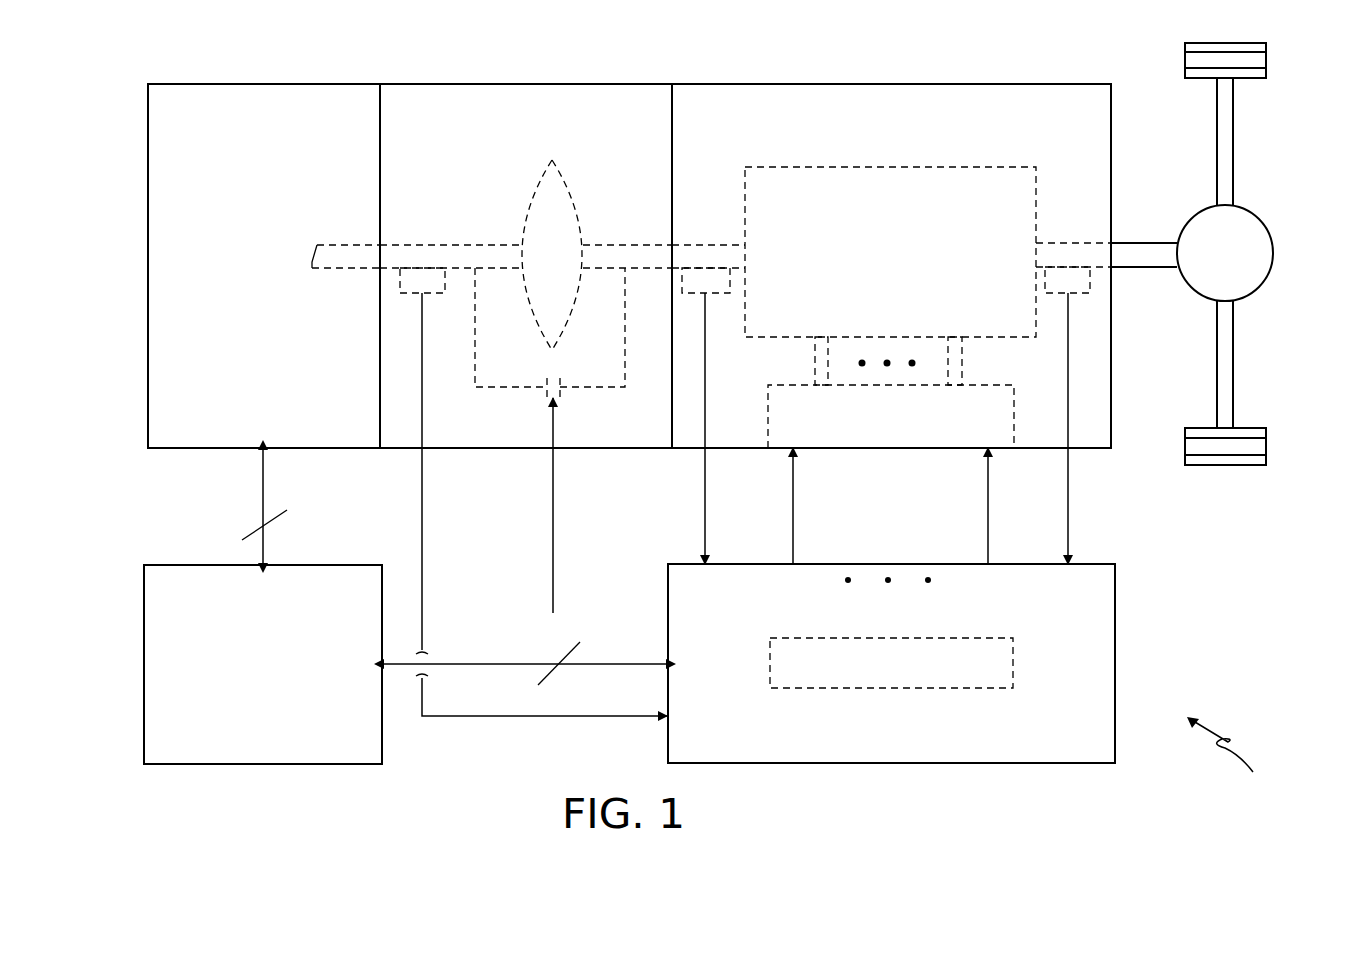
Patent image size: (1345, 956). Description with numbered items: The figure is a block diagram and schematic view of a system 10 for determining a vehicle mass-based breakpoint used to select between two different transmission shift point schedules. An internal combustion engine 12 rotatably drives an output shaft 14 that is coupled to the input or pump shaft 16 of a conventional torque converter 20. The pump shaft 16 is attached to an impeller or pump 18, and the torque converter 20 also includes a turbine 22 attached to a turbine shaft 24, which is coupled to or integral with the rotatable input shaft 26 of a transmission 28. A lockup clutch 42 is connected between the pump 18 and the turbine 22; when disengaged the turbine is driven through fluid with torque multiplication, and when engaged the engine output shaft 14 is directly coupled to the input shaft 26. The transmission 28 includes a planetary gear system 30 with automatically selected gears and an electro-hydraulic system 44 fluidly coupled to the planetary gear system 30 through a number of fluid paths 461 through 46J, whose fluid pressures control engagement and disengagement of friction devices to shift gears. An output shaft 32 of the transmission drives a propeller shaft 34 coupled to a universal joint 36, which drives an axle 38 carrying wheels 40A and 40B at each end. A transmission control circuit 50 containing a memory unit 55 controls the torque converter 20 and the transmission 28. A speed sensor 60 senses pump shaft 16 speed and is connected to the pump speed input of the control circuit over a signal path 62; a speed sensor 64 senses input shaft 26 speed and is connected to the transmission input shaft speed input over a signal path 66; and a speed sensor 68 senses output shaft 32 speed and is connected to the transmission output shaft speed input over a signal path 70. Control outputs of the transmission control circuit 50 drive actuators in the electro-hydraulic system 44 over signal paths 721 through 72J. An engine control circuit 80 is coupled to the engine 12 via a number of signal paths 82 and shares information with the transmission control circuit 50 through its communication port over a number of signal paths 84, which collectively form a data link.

The system 10 is at (1236, 751).
The internal combustion engine 12 is at (147, 172).
The output shaft 14 is at (360, 245).
The input or pump shaft 16 is at (416, 245).
The impeller or pump 18 is at (538, 183).
The torque converter 20 is at (524, 450).
The turbine 22 is at (567, 180).
The turbine shaft 24 is at (623, 245).
The input shaft 26 is at (713, 245).
The transmission 28 is at (1112, 122).
The planetary gear system 30 is at (980, 166).
The output shaft 32 is at (1062, 243).
The propeller shaft 34 is at (1150, 243).
The universal joint 36 is at (1275, 253).
The axle 38 is at (1235, 147).
The wheel 40A is at (1268, 58).
The wheel 40B is at (1228, 467).
The lockup clutch 42 is at (562, 396).
The electro-hydraulic system 44 is at (1015, 418).
The fluid path 461 is at (815, 370).
The fluid path 46J is at (962, 370).
The transmission control circuit 50 is at (1115, 637).
The memory unit 55 is at (1013, 655).
The speed sensor 60 is at (400, 282).
The signal path 62 is at (423, 522).
The speed sensor 64 is at (697, 294).
The signal path 66 is at (705, 482).
The speed sensor 68 is at (1090, 272).
The signal path 70 is at (1070, 497).
The signal path 721 is at (795, 508).
The signal path 72J is at (988, 485).
The engine control circuit 80 is at (356, 565).
The signal paths 82 is at (265, 488).
The signal paths 84 is at (467, 662).